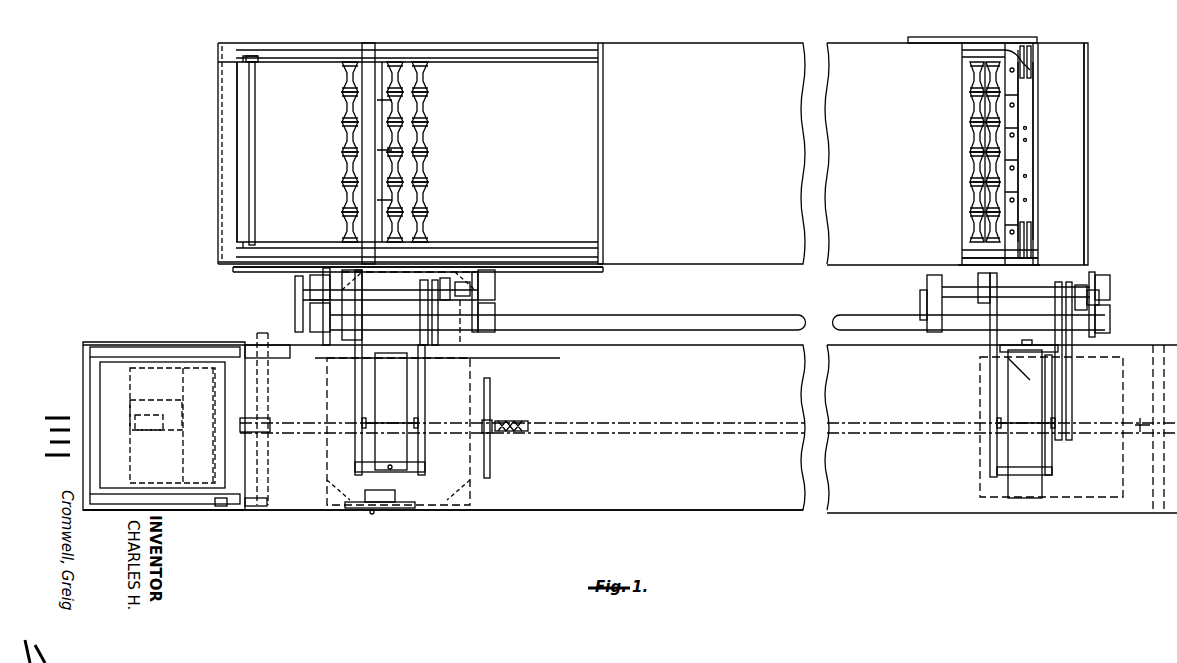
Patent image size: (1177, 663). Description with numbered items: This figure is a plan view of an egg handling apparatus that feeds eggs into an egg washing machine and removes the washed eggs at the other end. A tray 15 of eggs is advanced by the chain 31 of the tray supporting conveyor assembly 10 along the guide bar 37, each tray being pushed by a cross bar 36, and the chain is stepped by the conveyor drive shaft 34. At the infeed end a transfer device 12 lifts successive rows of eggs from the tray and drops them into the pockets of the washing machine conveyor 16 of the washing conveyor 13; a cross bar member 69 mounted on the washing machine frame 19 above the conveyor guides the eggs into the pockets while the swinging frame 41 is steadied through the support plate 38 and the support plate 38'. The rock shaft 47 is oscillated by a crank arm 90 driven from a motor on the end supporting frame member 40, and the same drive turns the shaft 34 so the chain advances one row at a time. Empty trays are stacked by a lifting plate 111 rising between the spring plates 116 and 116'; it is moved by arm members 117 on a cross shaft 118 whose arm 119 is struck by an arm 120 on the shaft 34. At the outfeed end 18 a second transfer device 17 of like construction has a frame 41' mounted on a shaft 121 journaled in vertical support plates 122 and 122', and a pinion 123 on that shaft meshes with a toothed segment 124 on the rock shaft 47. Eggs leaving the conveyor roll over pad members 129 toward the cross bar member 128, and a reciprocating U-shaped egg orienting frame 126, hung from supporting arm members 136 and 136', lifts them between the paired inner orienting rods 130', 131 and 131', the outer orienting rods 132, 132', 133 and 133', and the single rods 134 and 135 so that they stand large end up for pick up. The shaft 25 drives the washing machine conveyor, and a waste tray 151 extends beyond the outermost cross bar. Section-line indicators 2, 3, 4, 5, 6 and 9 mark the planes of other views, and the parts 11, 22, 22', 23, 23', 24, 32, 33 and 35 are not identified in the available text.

The tray supporting conveyor assembly 10 is at (1030, 16).
The creel frame box 11 is at (742, 42).
The washing conveyor 13 is at (212, 43).
The tray 15 is at (490, 492).
The washing machine conveyor 16 is at (246, 158).
The transfer device 17 is at (1122, 312).
The outfeed end 18 is at (1100, 62).
The washing machine frame 19 is at (564, 262).
The lower bracket 22 is at (205, 236).
The upper bracket 22' is at (218, 84).
The bobbin column 23 is at (961, 156).
The bobbin column 23' is at (667, 152).
The upright post 24 is at (256, 140).
The conveyor drive shaft 25 is at (985, 166).
The conveyor chain 31 is at (508, 422).
The shaft coupling 32 is at (277, 421).
The shaft end 33 is at (1142, 422).
The conveyor drive shaft 34 is at (268, 460).
The carriage outline 35 is at (1156, 381).
The cross bar 36 is at (491, 390).
The guide bar 37 is at (530, 505).
The support plate 38 is at (390, 285).
The support plate 38' is at (457, 283).
The end supporting frame member 40 is at (456, 513).
The frame 41 is at (406, 372).
The frame 41' is at (1045, 419).
The rock shaft 47 is at (695, 316).
The cross bar member 69 is at (368, 60).
The crank arm 90 is at (302, 300).
The lifting plate 111 is at (107, 386).
The stack supporting spring plate 116 is at (165, 516).
The stack supporting spring plate 116' is at (66, 425).
The arm members 117 is at (188, 448).
The cross shaft 118 is at (196, 348).
The arm 119 is at (228, 506).
The arm 120 is at (250, 506).
The shaft 121 is at (957, 285).
The vertical support plate 122 is at (1119, 306).
The vertical support plate 122' is at (904, 305).
The pinion 123 is at (985, 295).
The toothed segment 124 is at (985, 335).
The egg orienting frame 126 is at (1030, 90).
The cross bar member 128 is at (1040, 50).
The guide forming pad members 129 is at (1008, 112).
The innermost orienting rod 130' is at (1046, 168).
The innermost orienting rod 131 is at (1044, 128).
The innermost orienting rod 131' is at (1053, 148).
The outermost orienting rod 132 is at (1044, 235).
The outermost orienting rod 132' is at (1055, 240).
The outermost orienting rod 133 is at (1065, 50).
The outermost orienting rod 133' is at (1048, 47).
The single rod 134 is at (1028, 198).
The single rod 135 is at (1030, 110).
The supporting arm member 136 is at (979, 254).
The supporting arm member 136' is at (972, 29).
The waste tray 151 is at (1082, 88).
The section line 2 is at (31, 520).
The section line 3 is at (80, 26).
The section line 4 is at (196, 262).
The section line 5 is at (405, 16).
The section line 6 is at (293, 210).
The section line 9 is at (1176, 30).
The transfer device 12 is at (244, 293).